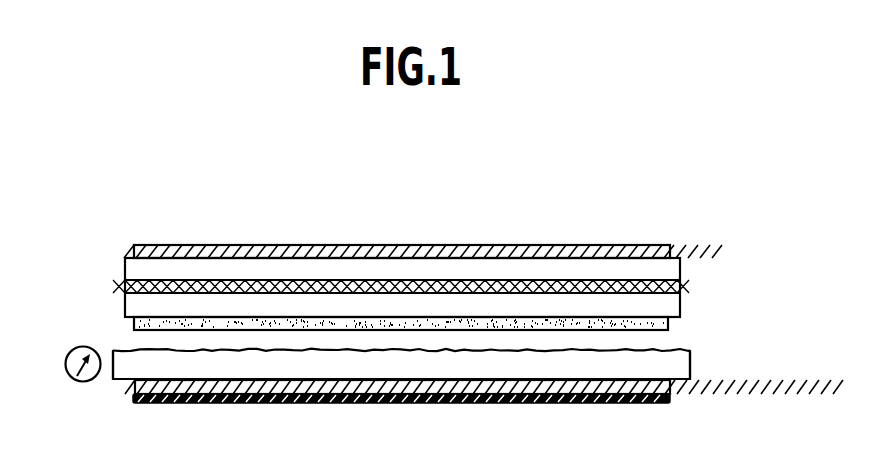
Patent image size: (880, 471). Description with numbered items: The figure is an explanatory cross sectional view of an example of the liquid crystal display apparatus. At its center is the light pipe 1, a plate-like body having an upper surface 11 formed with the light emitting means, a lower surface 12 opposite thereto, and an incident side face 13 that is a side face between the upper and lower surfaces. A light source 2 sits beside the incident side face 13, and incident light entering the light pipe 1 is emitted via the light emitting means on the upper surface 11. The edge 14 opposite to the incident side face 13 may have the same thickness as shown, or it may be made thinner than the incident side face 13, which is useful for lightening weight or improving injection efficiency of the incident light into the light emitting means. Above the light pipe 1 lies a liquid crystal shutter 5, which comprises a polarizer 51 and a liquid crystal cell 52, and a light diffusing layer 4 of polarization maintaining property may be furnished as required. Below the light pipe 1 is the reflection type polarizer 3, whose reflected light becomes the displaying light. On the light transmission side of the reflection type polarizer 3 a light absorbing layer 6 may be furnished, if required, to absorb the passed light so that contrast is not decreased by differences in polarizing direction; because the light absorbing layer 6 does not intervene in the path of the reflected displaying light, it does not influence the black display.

The light pipe 1 is at (425, 372).
The upper surface 11 is at (148, 352).
The lower surface 12 is at (691, 384).
The incident side face 13 is at (125, 381).
The edge opposite to the incident side face 14 is at (693, 370).
The light source 2 is at (80, 382).
The reflection type polarizer 3 is at (648, 396).
The light diffusing layer 4 is at (672, 323).
The liquid crystal shutter 5 is at (449, 264).
The polarizer 51 is at (672, 252).
The liquid crystal cell 52 is at (672, 308).
The light absorbing layer 6 is at (605, 404).